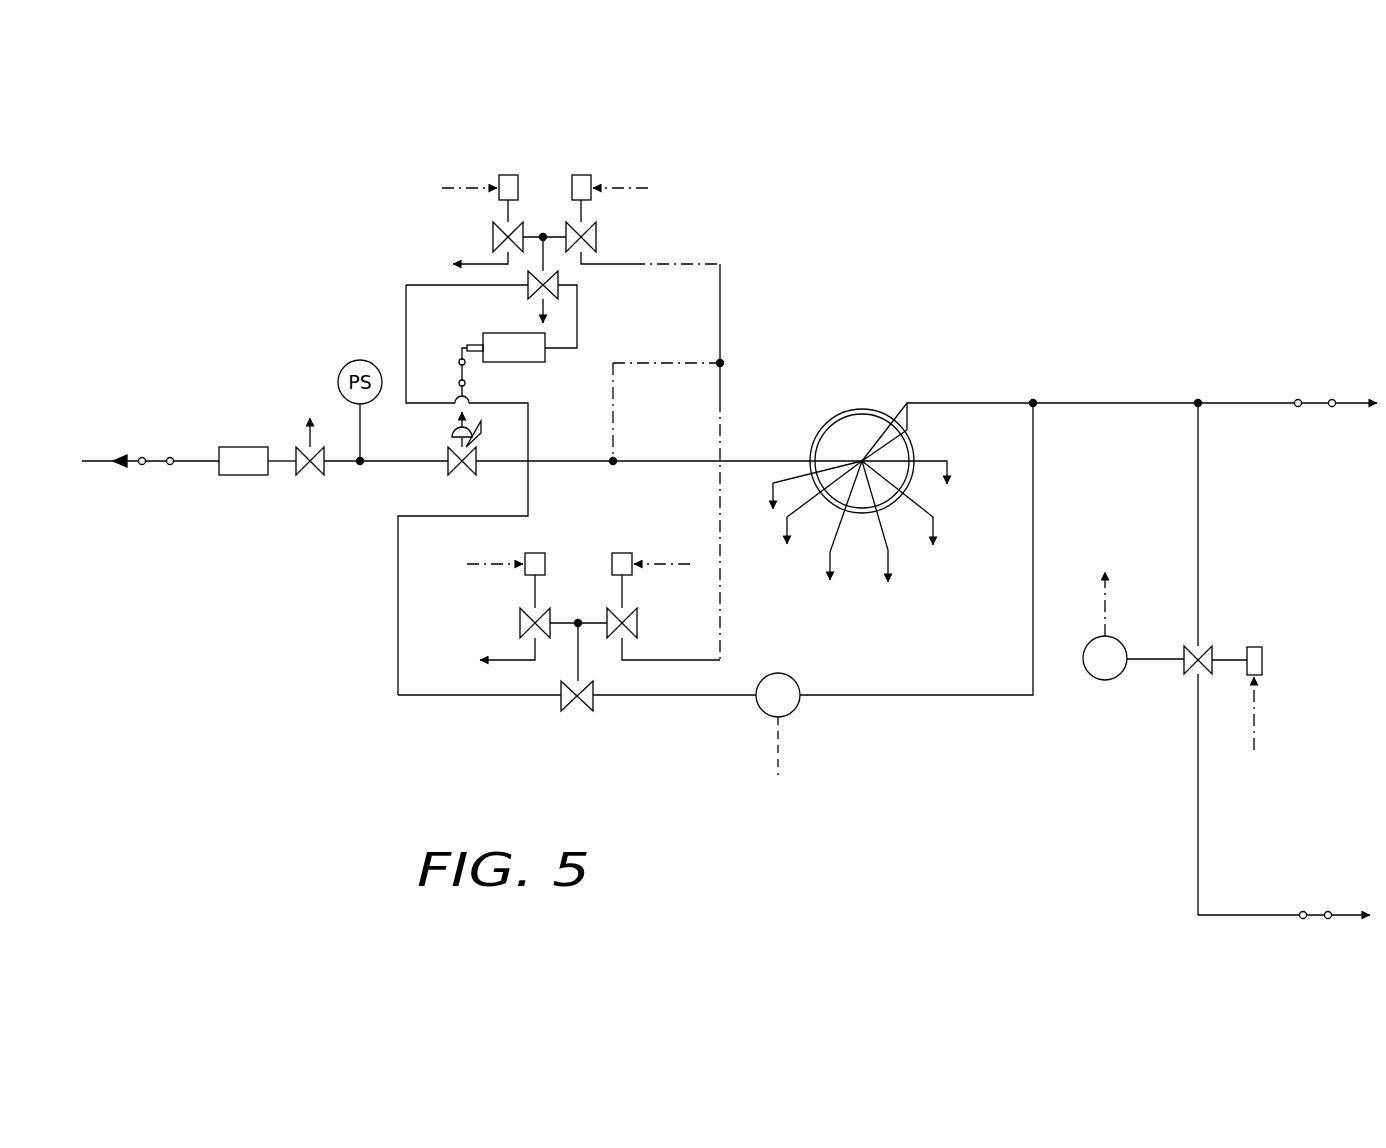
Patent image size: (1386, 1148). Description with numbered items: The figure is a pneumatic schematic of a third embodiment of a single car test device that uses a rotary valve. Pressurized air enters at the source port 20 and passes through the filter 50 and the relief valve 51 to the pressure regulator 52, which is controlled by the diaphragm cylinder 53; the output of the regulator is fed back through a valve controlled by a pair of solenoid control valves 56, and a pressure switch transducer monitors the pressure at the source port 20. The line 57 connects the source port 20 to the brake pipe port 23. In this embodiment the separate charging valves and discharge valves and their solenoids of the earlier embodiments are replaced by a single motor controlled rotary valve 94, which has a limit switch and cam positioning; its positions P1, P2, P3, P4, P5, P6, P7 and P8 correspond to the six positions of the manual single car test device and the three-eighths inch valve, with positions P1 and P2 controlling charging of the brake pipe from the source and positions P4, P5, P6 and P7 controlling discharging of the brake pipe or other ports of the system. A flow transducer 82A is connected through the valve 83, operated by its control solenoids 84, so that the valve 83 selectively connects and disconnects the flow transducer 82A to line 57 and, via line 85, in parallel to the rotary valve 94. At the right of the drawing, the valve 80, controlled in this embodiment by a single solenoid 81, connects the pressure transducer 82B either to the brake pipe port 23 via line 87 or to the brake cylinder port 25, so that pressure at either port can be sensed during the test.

The source port 20 is at (100, 458).
The filter 50 is at (241, 447).
The relief valve 51 is at (320, 477).
The pressure regulator 52 is at (449, 468).
The diaphragm cylinder 53 is at (530, 348).
The solenoid control valves 56 is at (533, 180).
The line 57 is at (665, 470).
The control solenoids 84 is at (582, 550).
The valve 83 is at (575, 712).
The line 85 is at (960, 698).
The flow transducer 82A is at (763, 717).
The rotary valve 94 is at (818, 437).
The valve position P1 is at (882, 412).
The valve position P2 is at (907, 430).
The valve position P3 is at (950, 472).
The valve position P4 is at (935, 533).
The valve position P5 is at (890, 562).
The valve position P6 is at (827, 565).
The valve position P7 is at (787, 530).
The valve position P8 is at (772, 497).
The brake pipe port 23 is at (1350, 403).
The line 87 is at (1200, 530).
The valve 80 is at (1203, 645).
The solenoid 81 is at (1262, 660).
The pressure transducer 82B is at (1105, 680).
The brake cylinder port 25 is at (1335, 915).